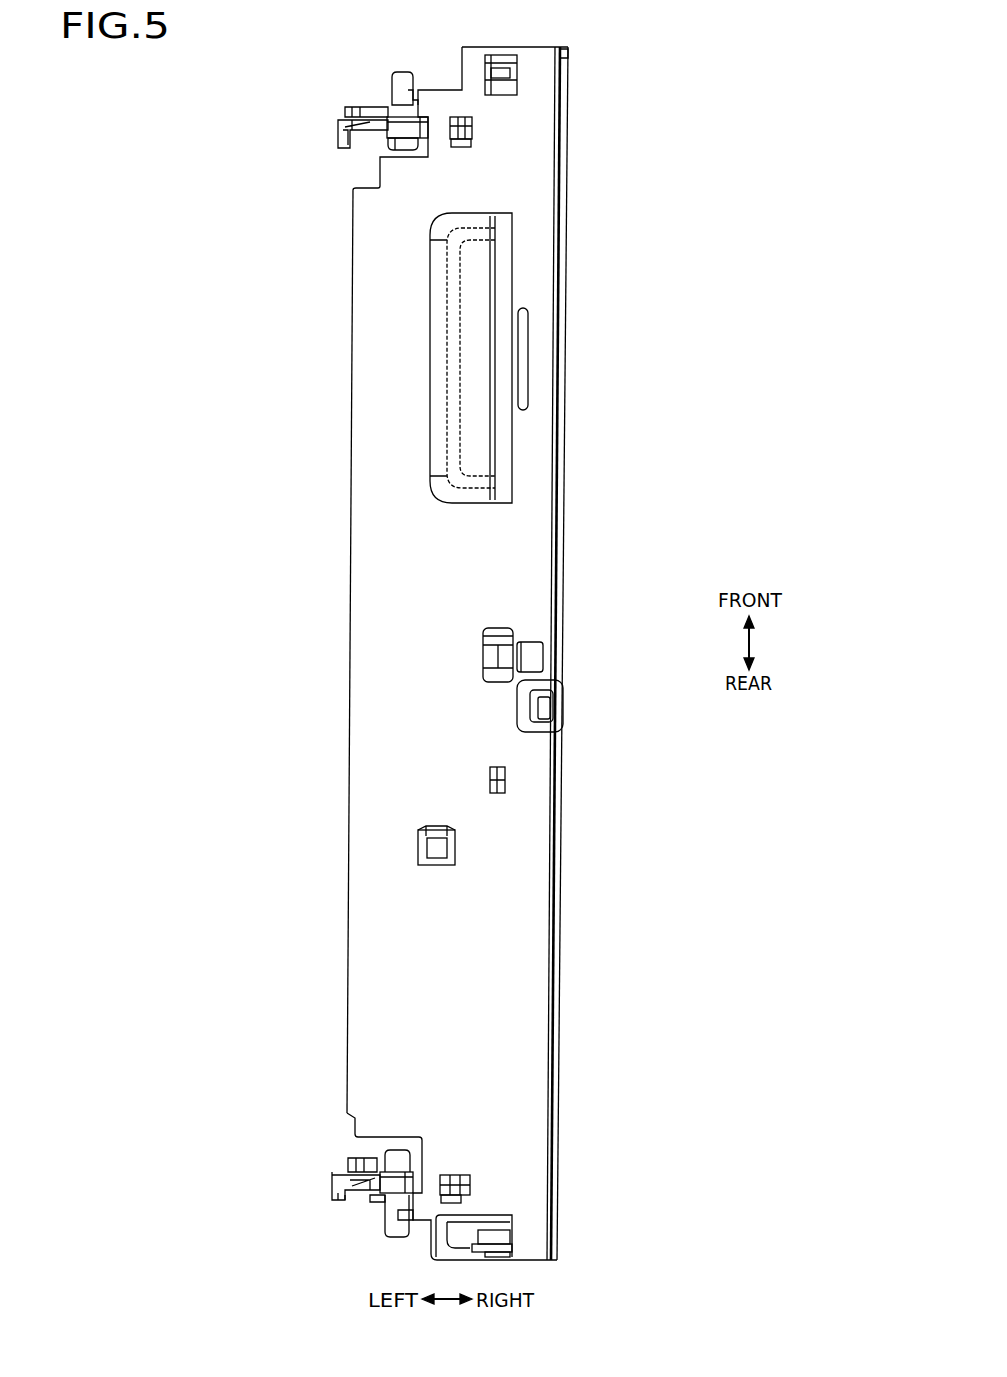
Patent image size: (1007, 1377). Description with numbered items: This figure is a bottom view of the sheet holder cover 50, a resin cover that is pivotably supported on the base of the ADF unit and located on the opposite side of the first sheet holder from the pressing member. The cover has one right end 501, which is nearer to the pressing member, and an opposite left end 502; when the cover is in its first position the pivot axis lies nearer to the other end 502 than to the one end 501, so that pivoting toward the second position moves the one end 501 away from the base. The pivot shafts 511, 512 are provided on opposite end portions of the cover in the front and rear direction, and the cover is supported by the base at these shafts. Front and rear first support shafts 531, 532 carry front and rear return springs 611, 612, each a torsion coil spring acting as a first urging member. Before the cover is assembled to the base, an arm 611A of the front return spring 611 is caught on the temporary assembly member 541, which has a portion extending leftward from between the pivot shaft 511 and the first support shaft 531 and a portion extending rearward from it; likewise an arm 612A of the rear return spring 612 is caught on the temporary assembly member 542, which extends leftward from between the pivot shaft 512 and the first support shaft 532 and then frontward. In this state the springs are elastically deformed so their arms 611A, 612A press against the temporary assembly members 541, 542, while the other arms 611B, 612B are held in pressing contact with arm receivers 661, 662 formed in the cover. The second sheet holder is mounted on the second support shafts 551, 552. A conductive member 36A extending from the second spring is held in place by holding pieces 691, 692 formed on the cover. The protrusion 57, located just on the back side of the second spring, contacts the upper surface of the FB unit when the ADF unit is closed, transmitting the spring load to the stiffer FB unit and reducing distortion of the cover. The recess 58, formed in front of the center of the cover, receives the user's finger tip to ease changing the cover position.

The sheet holder cover 50 is at (538, 948).
The one end 501 is at (560, 605).
The other end 502 is at (350, 605).
The protrusion 57 is at (488, 672).
The recess 58 is at (470, 355).
The conductive member 36A is at (440, 830).
The pivot shaft 511 is at (400, 78).
The pivot shaft 512 is at (396, 1232).
The first support shaft 531 is at (400, 145).
The first support shaft 532 is at (395, 1155).
The temporary assembly member 541 is at (345, 136).
The temporary assembly member 542 is at (355, 1163).
The second support shaft 551 is at (512, 73).
The second support shaft 552 is at (500, 1238).
The front return spring 611 is at (400, 128).
The arm 611A is at (355, 110).
The arm 611B is at (463, 145).
The rear return spring 612 is at (398, 1185).
The arm 612A is at (335, 1200).
The arm 612B is at (463, 1200).
The arm receiver 661 is at (470, 126).
The arm receiver 662 is at (465, 1182).
The holding piece 691 is at (505, 780).
The holding piece 692 is at (432, 845).